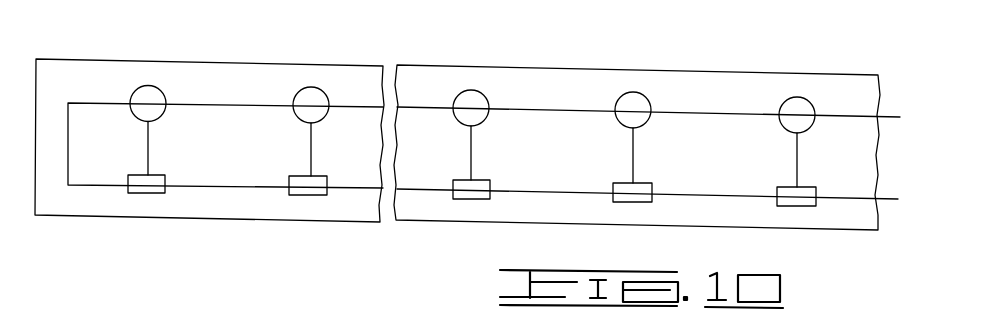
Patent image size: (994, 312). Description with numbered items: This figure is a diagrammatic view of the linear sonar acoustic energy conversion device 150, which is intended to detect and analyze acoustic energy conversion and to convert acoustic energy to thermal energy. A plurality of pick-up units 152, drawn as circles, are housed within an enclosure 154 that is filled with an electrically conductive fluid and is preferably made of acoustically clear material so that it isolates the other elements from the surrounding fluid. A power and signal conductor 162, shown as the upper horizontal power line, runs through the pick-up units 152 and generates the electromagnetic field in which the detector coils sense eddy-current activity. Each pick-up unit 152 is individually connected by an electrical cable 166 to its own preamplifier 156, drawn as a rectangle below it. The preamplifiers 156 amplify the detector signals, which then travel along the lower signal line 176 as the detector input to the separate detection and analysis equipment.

The linear sonar acoustic energy conversion device 150 is at (685, 54).
The pick-up unit 152 is at (477, 103).
The enclosure 154 is at (574, 67).
The preamplifier 156 is at (475, 185).
The power and signal conductor 162 is at (553, 108).
The electrical cable 166 is at (470, 143).
The signal line 176 is at (532, 190).